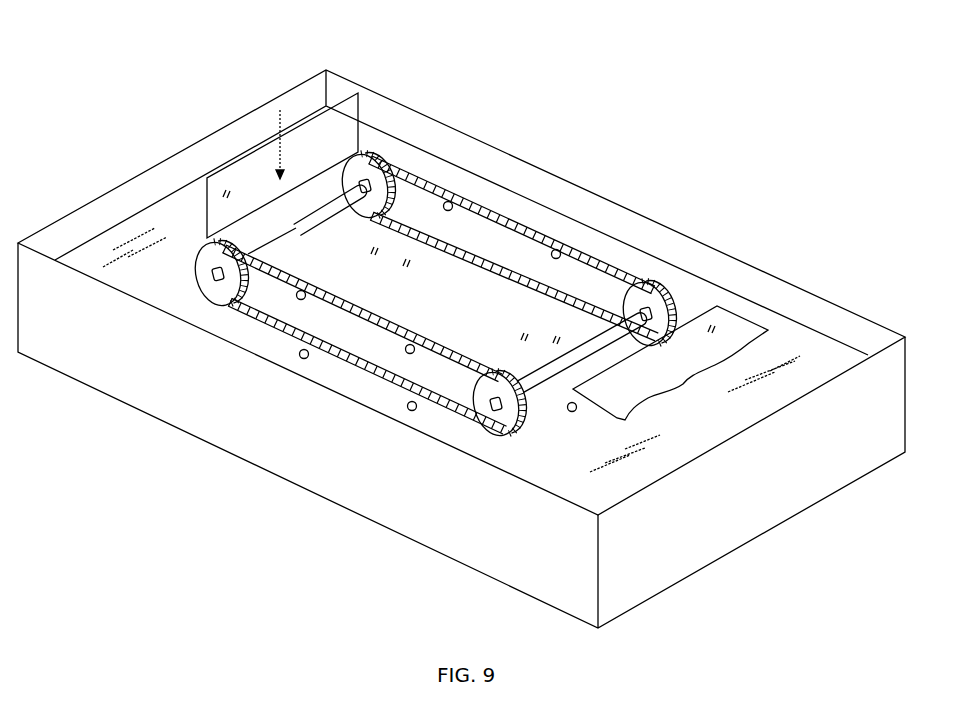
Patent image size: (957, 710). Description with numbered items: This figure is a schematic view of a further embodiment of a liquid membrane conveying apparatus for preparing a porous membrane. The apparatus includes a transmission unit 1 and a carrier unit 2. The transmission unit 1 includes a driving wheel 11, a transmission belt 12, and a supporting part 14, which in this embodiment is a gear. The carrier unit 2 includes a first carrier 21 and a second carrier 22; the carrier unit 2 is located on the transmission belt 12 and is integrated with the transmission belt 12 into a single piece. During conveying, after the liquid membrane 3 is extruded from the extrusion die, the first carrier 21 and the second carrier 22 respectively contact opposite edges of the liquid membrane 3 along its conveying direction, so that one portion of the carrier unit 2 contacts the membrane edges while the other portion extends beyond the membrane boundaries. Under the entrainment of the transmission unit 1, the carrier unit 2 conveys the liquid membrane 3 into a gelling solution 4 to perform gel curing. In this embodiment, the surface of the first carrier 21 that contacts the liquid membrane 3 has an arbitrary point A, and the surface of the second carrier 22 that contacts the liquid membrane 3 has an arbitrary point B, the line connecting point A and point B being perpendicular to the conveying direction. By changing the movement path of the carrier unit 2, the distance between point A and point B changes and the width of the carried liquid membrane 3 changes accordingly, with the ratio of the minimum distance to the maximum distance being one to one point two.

The transmission unit 1 is at (409, 244).
The carrier unit 2 is at (440, 231).
The first carrier 21 is at (281, 270).
The second carrier 22 is at (428, 180).
The driving wheel 11 is at (210, 258).
The transmission belt 12 is at (557, 241).
The supporting part 14 is at (413, 405).
The liquid membrane 3 is at (270, 170).
The gelling solution 4 is at (775, 348).
The arbitrary point A is at (332, 279).
The arbitrary point B is at (469, 187).